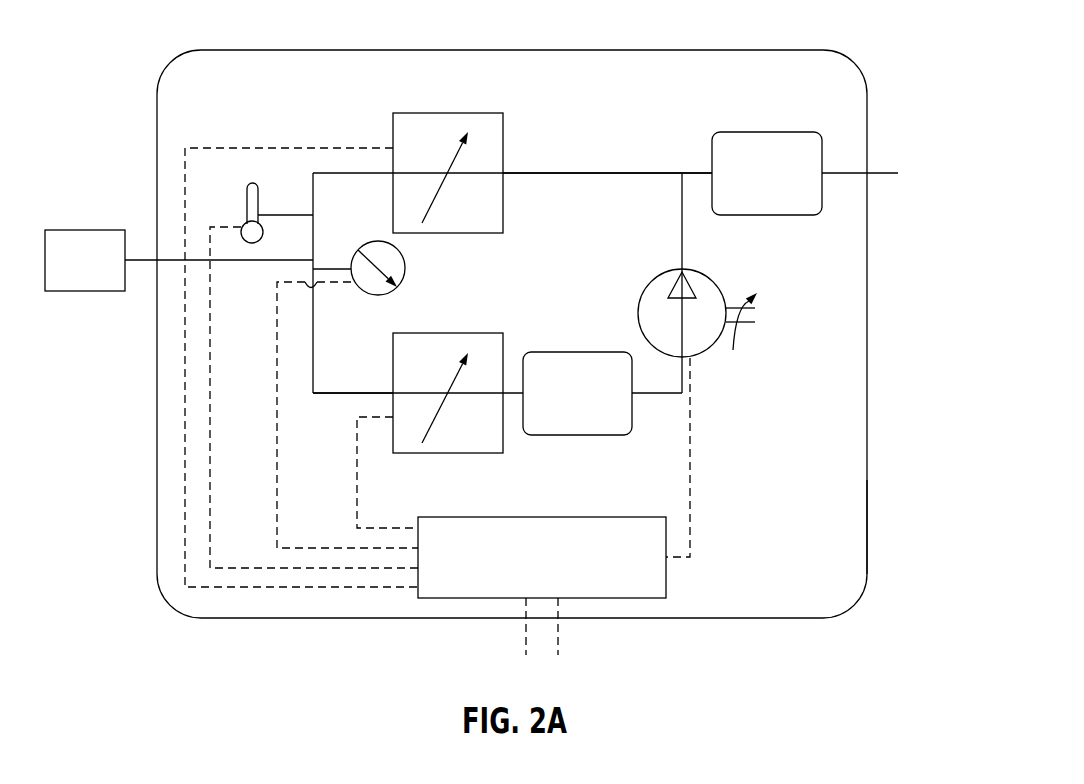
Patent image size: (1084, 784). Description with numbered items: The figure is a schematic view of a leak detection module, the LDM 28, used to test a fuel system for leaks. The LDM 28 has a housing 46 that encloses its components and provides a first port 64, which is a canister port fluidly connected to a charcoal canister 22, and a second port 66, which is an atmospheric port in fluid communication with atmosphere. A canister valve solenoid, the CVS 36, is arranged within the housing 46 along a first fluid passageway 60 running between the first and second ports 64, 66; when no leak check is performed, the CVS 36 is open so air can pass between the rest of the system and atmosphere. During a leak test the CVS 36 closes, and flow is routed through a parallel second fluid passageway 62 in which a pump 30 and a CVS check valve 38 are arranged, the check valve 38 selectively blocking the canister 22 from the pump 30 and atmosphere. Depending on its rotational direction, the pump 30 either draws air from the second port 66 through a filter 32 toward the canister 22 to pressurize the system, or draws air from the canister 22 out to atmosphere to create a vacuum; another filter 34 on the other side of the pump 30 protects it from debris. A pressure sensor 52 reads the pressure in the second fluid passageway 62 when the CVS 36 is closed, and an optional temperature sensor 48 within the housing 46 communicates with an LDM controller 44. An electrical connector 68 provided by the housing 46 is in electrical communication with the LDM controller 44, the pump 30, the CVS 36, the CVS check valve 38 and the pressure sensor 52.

The canister 22 is at (100, 274).
The leak detection module (LDM) 28 is at (744, 39).
The pump 30 is at (697, 355).
The filter 32 is at (767, 132).
The filter 34 is at (578, 352).
The canister valve solenoid (CVS) 36 is at (505, 137).
The CVS check valve 38 is at (505, 440).
The LDM controller 44 is at (615, 517).
The housing 46 is at (880, 568).
The temperature sensor 48 is at (247, 205).
The pressure sensor 52 is at (377, 297).
The first fluid passageway 60 is at (592, 166).
The second fluid passageway 62 is at (355, 401).
The first port 64 is at (146, 272).
The second port 66 is at (884, 165).
The electrical connector 68 is at (572, 636).